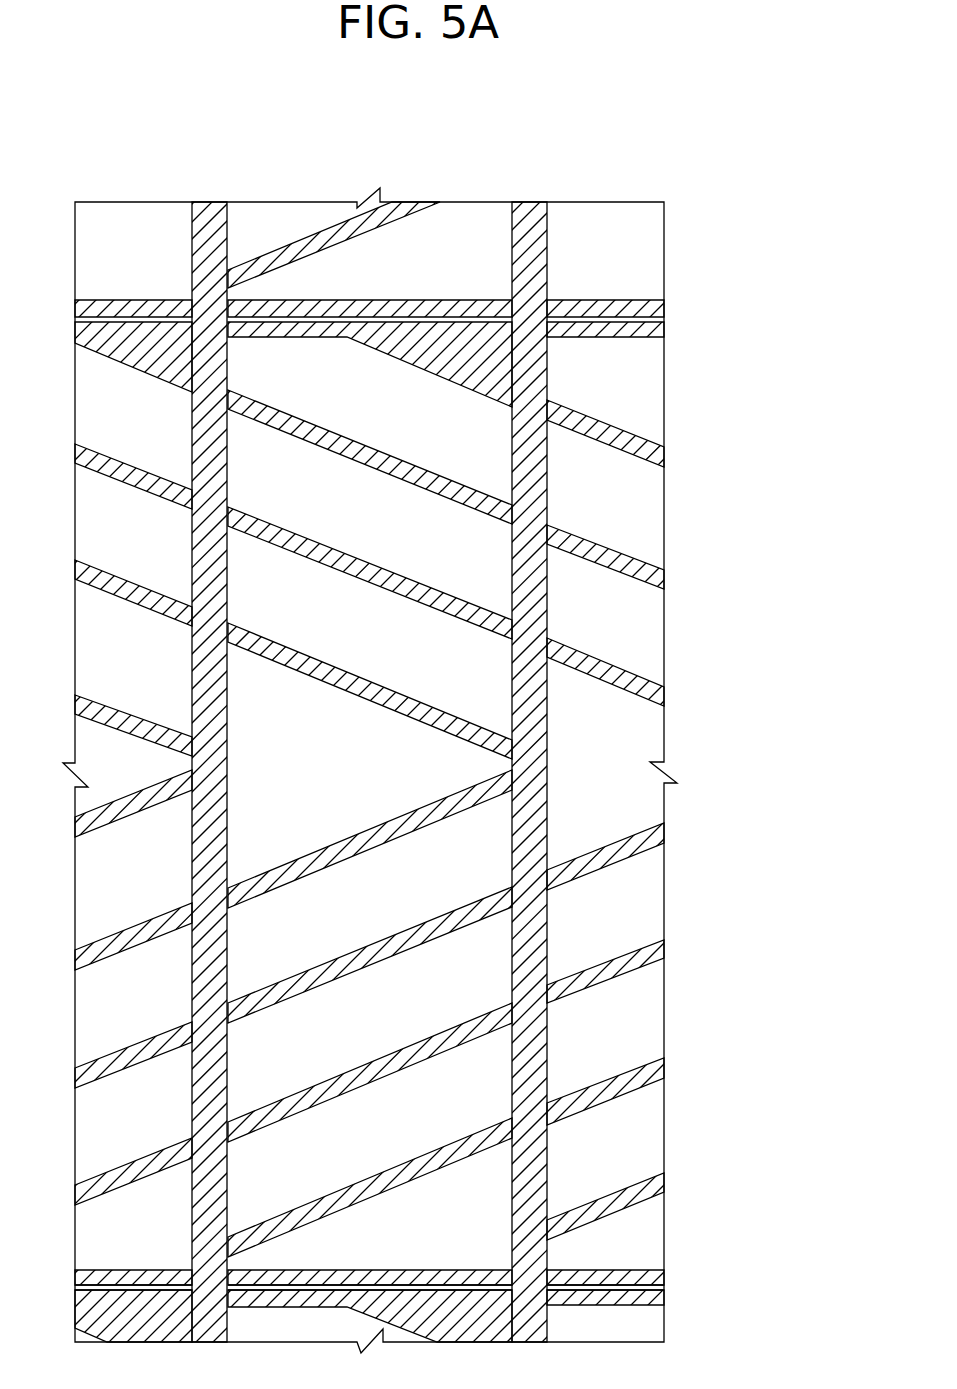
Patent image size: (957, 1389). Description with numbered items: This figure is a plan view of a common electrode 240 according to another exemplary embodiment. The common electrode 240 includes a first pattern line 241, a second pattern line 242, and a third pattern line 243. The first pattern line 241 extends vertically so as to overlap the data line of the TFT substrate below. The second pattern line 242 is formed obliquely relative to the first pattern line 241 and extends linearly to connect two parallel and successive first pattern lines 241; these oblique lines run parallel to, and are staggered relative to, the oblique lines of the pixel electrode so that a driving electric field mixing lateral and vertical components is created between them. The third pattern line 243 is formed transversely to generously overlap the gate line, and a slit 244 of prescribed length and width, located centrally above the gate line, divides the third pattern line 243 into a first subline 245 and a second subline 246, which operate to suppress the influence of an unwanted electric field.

The common electrode 240 is at (478, 770).
The first pattern line 241 is at (538, 1193).
The second pattern line 242 is at (503, 1132).
The third pattern line 243 is at (478, 772).
The slit 244 is at (664, 1287).
The first subline 245 is at (657, 1277).
The second subline 246 is at (660, 1300).